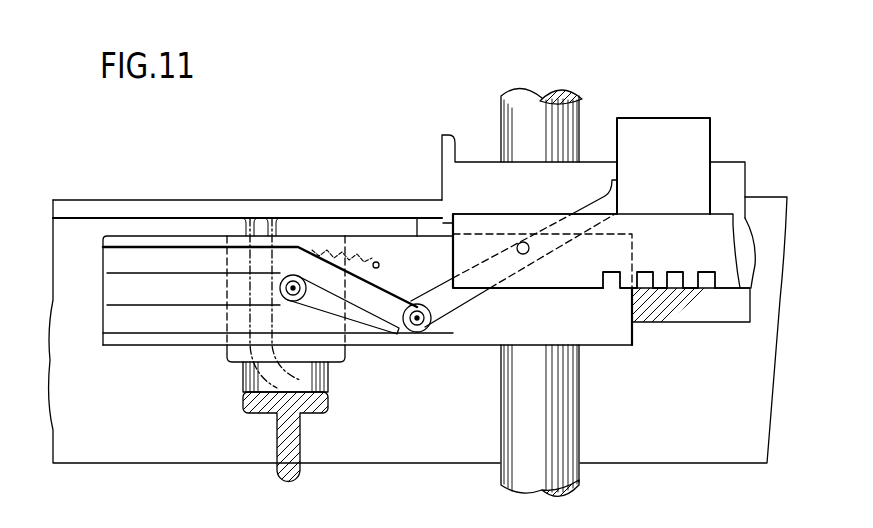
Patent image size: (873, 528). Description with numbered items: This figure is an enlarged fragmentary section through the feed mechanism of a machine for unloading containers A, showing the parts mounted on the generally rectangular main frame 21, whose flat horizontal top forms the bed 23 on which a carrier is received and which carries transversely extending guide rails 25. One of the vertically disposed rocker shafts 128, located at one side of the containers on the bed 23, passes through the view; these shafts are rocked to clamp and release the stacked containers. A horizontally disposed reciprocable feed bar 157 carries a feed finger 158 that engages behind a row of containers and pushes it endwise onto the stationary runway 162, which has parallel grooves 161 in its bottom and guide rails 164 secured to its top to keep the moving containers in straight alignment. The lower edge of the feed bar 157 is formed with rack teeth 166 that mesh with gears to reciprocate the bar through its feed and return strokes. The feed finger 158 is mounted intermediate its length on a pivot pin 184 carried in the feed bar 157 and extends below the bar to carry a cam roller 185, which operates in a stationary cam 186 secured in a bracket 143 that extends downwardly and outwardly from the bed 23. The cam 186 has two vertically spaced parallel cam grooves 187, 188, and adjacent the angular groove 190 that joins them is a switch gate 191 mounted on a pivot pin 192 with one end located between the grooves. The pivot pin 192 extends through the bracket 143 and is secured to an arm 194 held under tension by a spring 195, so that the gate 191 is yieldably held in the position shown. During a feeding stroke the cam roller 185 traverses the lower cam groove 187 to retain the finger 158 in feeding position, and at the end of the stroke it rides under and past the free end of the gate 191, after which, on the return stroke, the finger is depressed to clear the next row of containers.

The main frame 21 is at (62, 402).
The bed 23 is at (201, 199).
The guide rails 25 is at (442, 147).
The rocker shafts 128 is at (545, 111).
The containers A is at (656, 128).
The guide rails 164 is at (731, 172).
The feed fingers 158 is at (608, 198).
The feed bars 157 is at (668, 233).
The rack teeth 166 is at (691, 284).
The grooves 161 is at (738, 273).
The runway 162 is at (660, 315).
The pivot pins 184 is at (529, 253).
The cam rollers 185 is at (410, 303).
The angular groove 190 is at (395, 288).
The switch gate 191 is at (361, 318).
The pivot pin 192 is at (294, 293).
The arms 194 is at (296, 262).
The springs 195 is at (327, 250).
The cam groove 188 is at (140, 246).
The cams 186 is at (172, 337).
The cam groove 187 is at (130, 334).
The brackets 143 is at (289, 438).